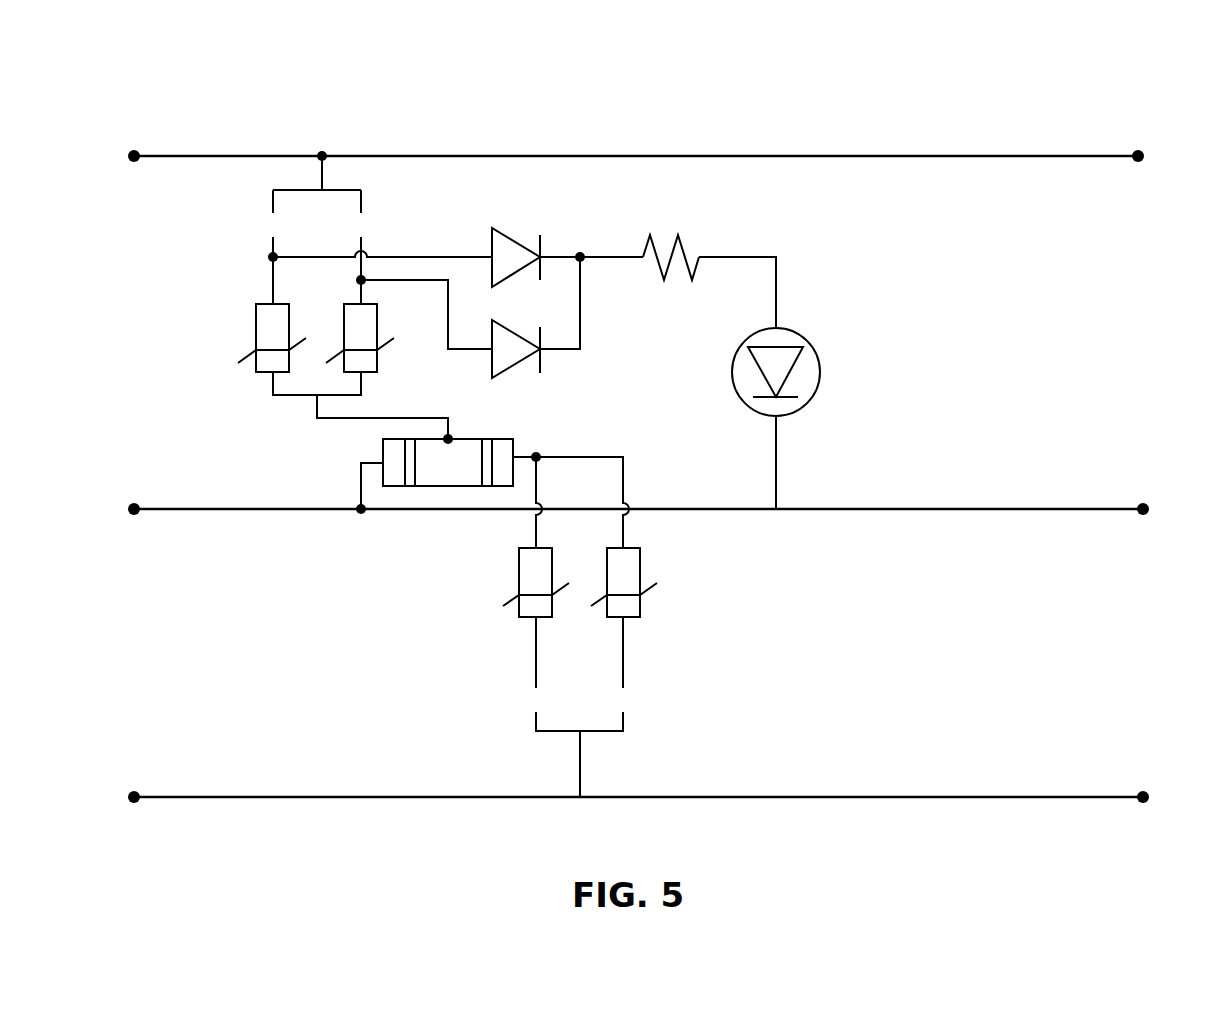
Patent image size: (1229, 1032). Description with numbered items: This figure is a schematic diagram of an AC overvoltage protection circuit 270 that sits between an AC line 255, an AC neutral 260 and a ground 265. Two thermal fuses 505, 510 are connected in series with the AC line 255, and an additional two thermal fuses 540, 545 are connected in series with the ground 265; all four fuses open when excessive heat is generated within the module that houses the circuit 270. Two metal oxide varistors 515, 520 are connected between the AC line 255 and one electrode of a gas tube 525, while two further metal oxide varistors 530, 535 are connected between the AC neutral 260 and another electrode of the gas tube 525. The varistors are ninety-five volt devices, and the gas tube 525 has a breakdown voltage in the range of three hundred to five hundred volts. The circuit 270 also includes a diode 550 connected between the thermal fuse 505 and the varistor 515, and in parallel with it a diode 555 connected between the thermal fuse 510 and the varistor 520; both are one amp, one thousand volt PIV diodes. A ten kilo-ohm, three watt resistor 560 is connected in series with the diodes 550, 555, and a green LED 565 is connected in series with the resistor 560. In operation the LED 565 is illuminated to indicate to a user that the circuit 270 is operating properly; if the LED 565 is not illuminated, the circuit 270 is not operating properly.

The AC line 255 is at (138, 152).
The AC neutral 260 is at (138, 505).
The ground 265 is at (138, 793).
The AC overvoltage protection circuit 270 is at (995, 138).
The thermal fuse 505 is at (263, 214).
The thermal fuse 510 is at (372, 212).
The metal oxide varistor 515 is at (271, 302).
The metal oxide varistor 520 is at (358, 302).
The gas tube 525 is at (448, 462).
The metal oxide varistor 530 is at (533, 546).
The metal oxide varistor 535 is at (621, 546).
The thermal fuse 540 is at (531, 690).
The thermal fuse 545 is at (618, 690).
The diode 550 is at (516, 257).
The diode 555 is at (516, 349).
The resistor 560 is at (646, 236).
The green LED 565 is at (797, 326).